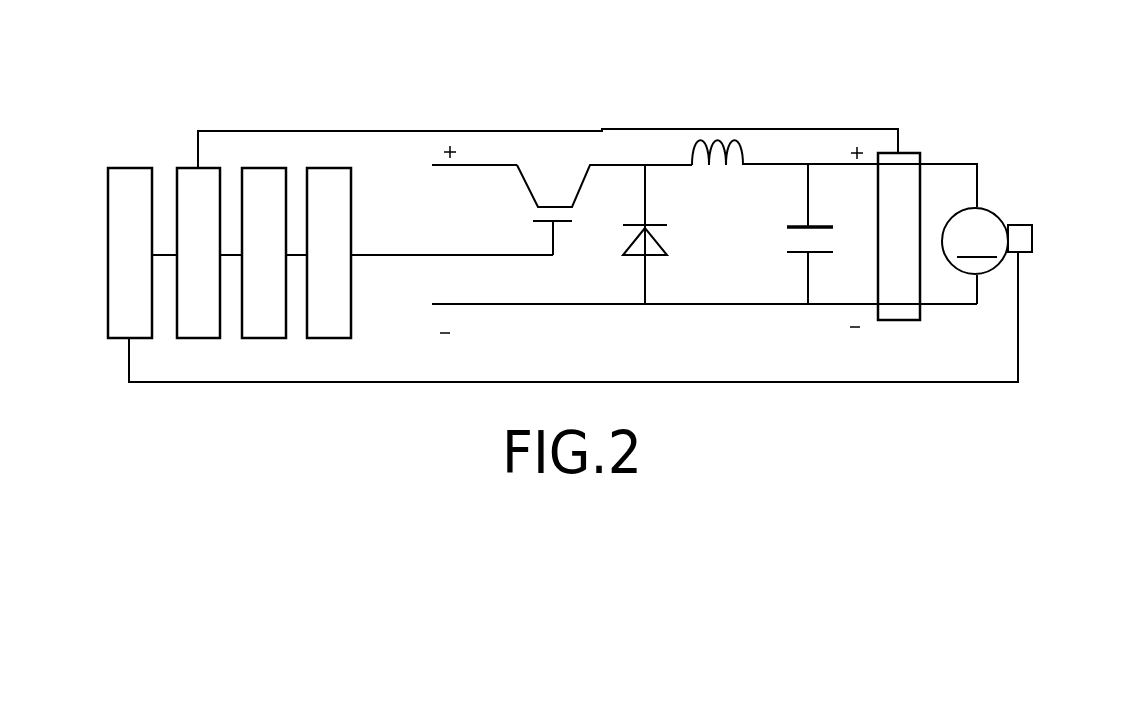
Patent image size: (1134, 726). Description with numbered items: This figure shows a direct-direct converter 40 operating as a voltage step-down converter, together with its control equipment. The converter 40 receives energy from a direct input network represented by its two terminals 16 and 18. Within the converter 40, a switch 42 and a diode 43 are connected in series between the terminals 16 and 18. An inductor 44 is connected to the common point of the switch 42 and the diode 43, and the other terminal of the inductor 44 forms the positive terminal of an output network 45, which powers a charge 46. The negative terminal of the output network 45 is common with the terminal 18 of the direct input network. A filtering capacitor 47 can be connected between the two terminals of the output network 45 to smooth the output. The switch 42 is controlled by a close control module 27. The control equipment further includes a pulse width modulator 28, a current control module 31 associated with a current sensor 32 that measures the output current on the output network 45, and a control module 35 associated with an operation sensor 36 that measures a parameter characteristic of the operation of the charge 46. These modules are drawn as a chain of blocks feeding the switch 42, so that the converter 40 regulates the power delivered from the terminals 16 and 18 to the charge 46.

The terminal 16 is at (477, 167).
The terminal 18 is at (483, 304).
The close control module 27 is at (330, 168).
The pulse width modulator 28 is at (263, 168).
The current control module 31 is at (183, 168).
The current sensor 32 is at (898, 320).
The control module 35 is at (130, 168).
The operation sensor 36 is at (1032, 237).
The direct-direct converter 40 is at (675, 160).
The switch 42 is at (558, 207).
The diode 43 is at (657, 246).
The inductor 44 is at (718, 142).
The output network 45 is at (935, 264).
The charge 46 is at (975, 241).
The filtering capacitor 47 is at (802, 252).